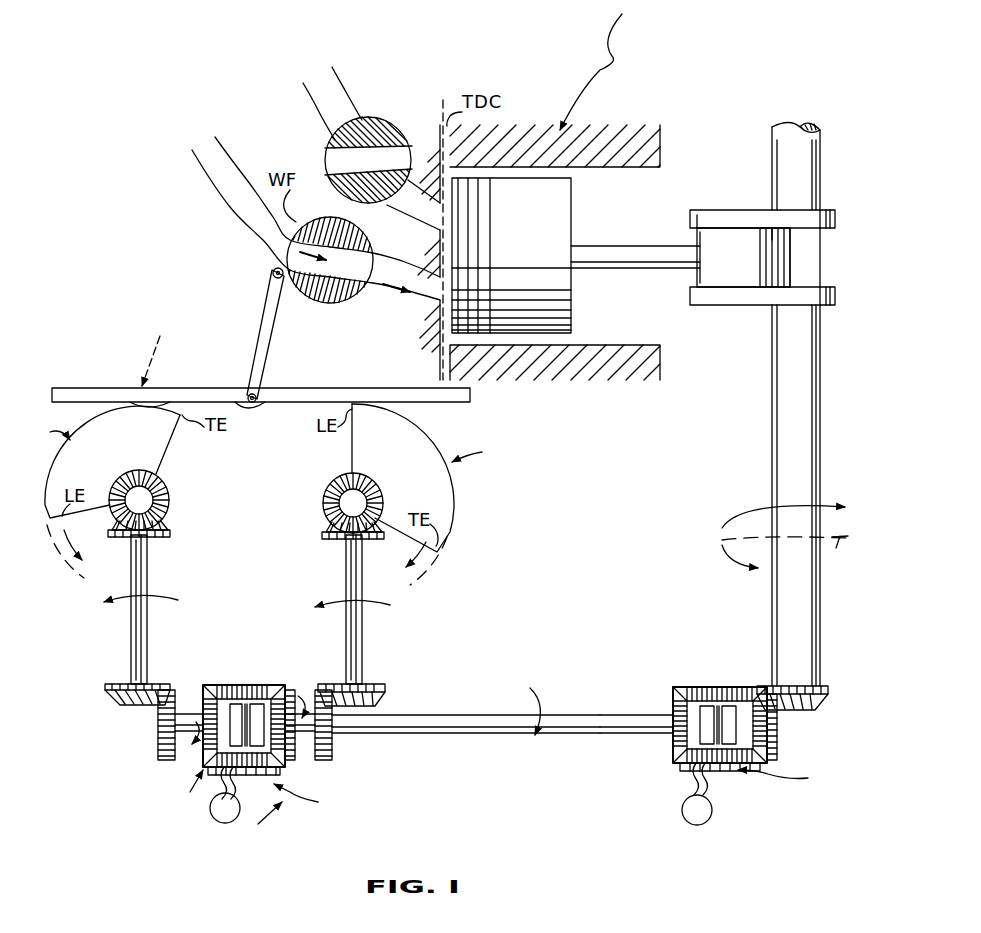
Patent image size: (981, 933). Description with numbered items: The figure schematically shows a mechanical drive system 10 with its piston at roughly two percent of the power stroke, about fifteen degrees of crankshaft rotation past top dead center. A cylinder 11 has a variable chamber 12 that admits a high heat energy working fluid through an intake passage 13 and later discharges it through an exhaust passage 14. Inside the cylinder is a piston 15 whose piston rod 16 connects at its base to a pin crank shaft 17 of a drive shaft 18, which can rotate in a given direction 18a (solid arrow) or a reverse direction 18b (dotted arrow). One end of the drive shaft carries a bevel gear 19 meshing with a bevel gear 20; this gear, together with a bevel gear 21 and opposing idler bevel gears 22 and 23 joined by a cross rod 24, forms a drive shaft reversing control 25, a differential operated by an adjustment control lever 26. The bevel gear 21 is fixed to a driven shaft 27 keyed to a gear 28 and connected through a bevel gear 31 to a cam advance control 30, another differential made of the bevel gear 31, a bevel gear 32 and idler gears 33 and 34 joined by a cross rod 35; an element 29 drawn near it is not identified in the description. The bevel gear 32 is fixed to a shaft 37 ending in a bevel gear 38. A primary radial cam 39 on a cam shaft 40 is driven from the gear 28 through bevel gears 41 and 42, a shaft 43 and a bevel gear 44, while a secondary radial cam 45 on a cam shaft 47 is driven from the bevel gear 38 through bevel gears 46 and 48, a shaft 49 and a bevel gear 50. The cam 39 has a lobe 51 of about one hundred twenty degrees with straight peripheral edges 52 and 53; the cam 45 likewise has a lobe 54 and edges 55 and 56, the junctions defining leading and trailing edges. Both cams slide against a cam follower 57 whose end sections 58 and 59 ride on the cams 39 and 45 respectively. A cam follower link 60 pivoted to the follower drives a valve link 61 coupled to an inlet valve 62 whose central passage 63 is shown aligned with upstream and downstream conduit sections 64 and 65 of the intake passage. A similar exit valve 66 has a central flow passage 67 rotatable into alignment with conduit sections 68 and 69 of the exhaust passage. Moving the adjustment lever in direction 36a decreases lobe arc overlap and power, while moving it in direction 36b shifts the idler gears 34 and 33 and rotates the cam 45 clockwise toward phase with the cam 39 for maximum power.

The mechanical drive system 10 is at (605, 65).
The cylinder 11 is at (520, 164).
The variable chamber 12 is at (455, 350).
The intake passage 13 is at (410, 300).
The exhaust passage 14 is at (418, 221).
The piston 15 is at (560, 214).
The piston rod 16 is at (624, 258).
The pin crank shaft 17 is at (790, 270).
The drive shaft 18 is at (820, 164).
The given direction 18a is at (723, 528).
The reverse direction 18b is at (836, 545).
The bevel gear 19 is at (822, 696).
The bevel gear 20 is at (766, 740).
The bevel gear 21 is at (674, 708).
The idler bevel gear 22 is at (746, 690).
The idler bevel gear 23 is at (690, 766).
The cross rod 24 is at (700, 720).
The drive shaft reversing control 25 is at (785, 779).
The adjustment control lever 26 is at (692, 790).
The driven shaft 27 is at (454, 717).
The gear 28 is at (340, 743).
The shaft bearing 29 is at (314, 738).
The cam advance control 30 is at (307, 797).
The bevel gear 31 is at (300, 710).
The bevel gear 32 is at (194, 760).
The idler gear 33 is at (250, 692).
The idler gear 34 is at (254, 771).
The cross rod 35 is at (238, 710).
The directional arrow 36a is at (238, 828).
The directional arrow 36b is at (194, 790).
The shaft 37 is at (190, 713).
The bevel gear 38 is at (160, 735).
The primary radial cam 39 is at (429, 494).
The cam shaft 40 is at (330, 500).
The bevel gear 41 is at (328, 514).
The bevel gear 42 is at (334, 540).
The shaft 43 is at (348, 602).
The bevel gear 44 is at (380, 690).
The secondary radial cam 45 is at (112, 492).
The bevel gear 46 is at (168, 488).
The cam shaft 47 is at (141, 505).
The bevel gear 48 is at (157, 533).
The shaft 49 is at (142, 642).
The bevel gear 50 is at (164, 687).
The lobe 51 is at (452, 488).
The straight peripheral edge 52 is at (352, 460).
The straight peripheral edge 53 is at (380, 530).
The lobe 54 is at (50, 456).
The straight peripheral edge 55 is at (90, 518).
The straight peripheral edge 56 is at (172, 438).
The cam follower 57 is at (155, 349).
The end section 58 is at (452, 390).
The end section 59 is at (70, 388).
The cam follower link 60 is at (264, 322).
The valve link 61 is at (284, 302).
The inlet valve 62 is at (328, 290).
The central passage 63 is at (276, 258).
The upstream conduit section 64 is at (216, 156).
The downstream conduit section 65 is at (386, 298).
The exit valve 66 is at (370, 128).
The central flow passage 67 is at (410, 158).
The downstream conduit section 68 is at (384, 208).
The upstream conduit section 69 is at (328, 102).